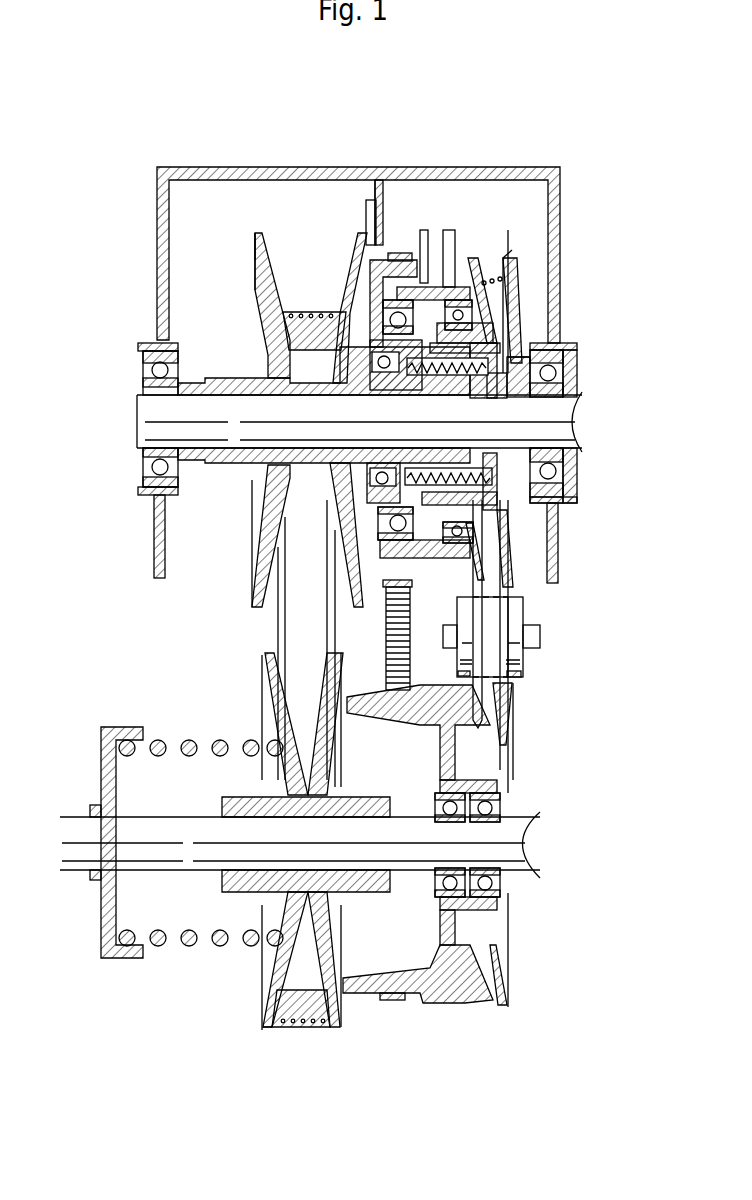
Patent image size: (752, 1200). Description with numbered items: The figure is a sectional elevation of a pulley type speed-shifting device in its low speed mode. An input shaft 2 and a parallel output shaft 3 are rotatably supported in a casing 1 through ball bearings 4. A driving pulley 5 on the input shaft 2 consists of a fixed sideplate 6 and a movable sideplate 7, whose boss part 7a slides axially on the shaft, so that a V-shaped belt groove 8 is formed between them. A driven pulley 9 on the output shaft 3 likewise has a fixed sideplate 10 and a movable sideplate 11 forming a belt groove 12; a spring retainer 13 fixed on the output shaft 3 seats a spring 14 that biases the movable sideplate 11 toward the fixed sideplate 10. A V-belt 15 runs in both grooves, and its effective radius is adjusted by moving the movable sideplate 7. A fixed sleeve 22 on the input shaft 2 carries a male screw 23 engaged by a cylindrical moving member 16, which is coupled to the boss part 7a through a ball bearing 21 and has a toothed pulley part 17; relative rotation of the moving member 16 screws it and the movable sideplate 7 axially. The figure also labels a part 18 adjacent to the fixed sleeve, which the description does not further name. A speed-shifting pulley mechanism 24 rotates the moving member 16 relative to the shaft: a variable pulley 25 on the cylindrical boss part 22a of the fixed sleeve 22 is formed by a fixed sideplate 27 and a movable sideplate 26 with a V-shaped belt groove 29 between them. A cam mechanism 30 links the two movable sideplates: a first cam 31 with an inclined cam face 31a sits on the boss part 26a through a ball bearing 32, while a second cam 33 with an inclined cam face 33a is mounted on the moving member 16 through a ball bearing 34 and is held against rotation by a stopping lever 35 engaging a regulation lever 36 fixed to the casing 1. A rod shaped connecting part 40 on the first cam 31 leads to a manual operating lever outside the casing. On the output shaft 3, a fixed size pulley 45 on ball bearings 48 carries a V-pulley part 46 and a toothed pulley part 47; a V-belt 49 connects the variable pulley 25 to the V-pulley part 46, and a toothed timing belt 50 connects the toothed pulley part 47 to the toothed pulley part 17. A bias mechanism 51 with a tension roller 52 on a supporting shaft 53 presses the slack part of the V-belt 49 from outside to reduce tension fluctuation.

The casing 1 is at (562, 184).
The input shaft 2 is at (588, 392).
The output shaft 3 is at (522, 868).
The ball bearings 4 is at (143, 457).
The driving pulley 5 is at (257, 232).
The fixed sideplate 6 is at (254, 240).
The movable sideplate 7 is at (360, 233).
The boss part 7a is at (340, 386).
The V-shaped belt groove 8 is at (271, 268).
The driven pulley 9 is at (259, 967).
The fixed sideplate 10 is at (340, 1022).
The movable sideplate 11 is at (264, 1030).
The belt groove 12 is at (301, 995).
The spring retainer 13 is at (95, 950).
The spring 14 is at (245, 740).
The V-belt 15 is at (278, 623).
The moving member 16 is at (491, 482).
The toothed pulley part 17 is at (383, 237).
The hub wall 18 is at (487, 372).
The ball bearing 21 is at (368, 462).
The fixed sleeve 22 is at (513, 378).
The cylindrical boss part 22a is at (530, 357).
The male screw 23 is at (443, 376).
The speed-shifting pulley mechanism 24 is at (538, 664).
The variable pulley 25 is at (510, 260).
The movable sideplate 26 is at (477, 258).
The boss part 26a is at (477, 333).
The fixed sideplate 27 is at (520, 263).
The V-shaped belt groove 29 is at (515, 257).
The cam mechanism 30 is at (433, 286).
The first cam 31 is at (458, 290).
The inclined cam face 31a is at (385, 578).
The ball bearing 32 is at (470, 297).
The second cam 33 is at (390, 560).
The inclined cam face 33a is at (406, 558).
The ball bearing 34 is at (410, 517).
The stopping lever 35 is at (420, 256).
The regulation lever 36 is at (372, 205).
The connecting part 40 is at (449, 230).
The fixed size pulley 45 is at (453, 1006).
The V-pulley part 46 is at (493, 970).
The toothed pulley part 47 is at (372, 997).
The ball bearings 48 is at (436, 878).
The V-belt 49 is at (508, 607).
The toothed timing belt 50 is at (509, 658).
The bias mechanism 51 is at (524, 602).
The tension roller 52 is at (517, 678).
The supporting shaft 53 is at (540, 634).